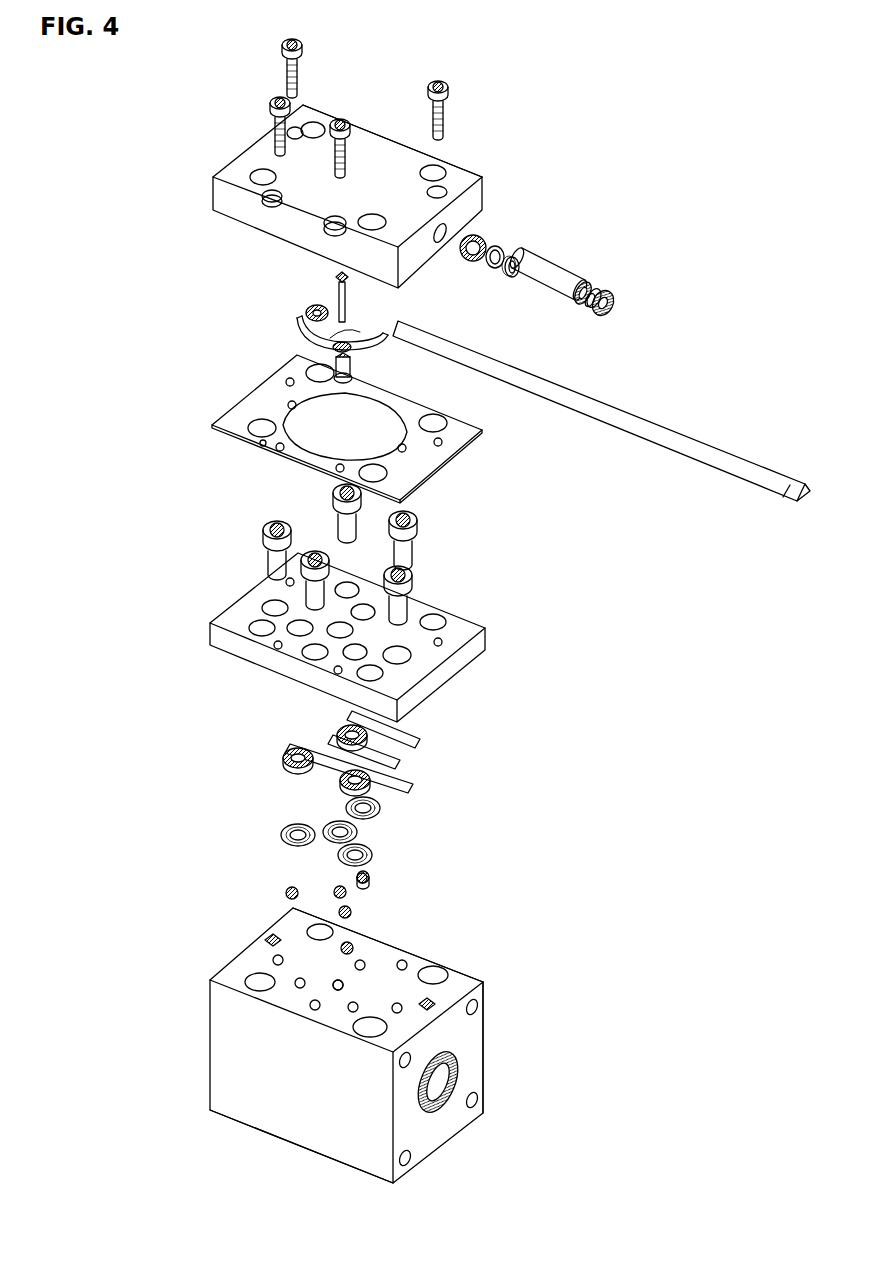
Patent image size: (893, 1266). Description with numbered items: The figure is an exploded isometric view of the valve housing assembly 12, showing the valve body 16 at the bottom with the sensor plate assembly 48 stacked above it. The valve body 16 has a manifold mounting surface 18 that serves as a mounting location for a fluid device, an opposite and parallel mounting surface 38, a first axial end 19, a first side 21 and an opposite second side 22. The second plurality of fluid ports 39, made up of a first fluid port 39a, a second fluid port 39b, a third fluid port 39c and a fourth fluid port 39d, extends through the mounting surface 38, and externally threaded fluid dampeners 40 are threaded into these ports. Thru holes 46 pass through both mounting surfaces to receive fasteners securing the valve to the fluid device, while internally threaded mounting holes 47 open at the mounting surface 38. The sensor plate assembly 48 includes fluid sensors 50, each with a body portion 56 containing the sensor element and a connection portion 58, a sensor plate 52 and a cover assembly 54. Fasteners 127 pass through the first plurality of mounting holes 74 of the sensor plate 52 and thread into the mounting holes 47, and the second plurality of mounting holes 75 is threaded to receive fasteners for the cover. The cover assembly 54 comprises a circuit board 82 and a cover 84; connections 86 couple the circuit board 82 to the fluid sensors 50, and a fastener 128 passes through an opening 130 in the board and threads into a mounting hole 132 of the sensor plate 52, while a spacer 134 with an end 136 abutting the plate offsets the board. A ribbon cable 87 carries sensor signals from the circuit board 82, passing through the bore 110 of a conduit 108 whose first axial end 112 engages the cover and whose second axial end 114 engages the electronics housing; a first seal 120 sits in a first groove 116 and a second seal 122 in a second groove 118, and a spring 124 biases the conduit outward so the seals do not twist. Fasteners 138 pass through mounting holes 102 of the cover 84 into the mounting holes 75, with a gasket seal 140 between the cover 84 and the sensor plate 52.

The valve housing assembly 12 is at (113, 248).
The cover assembly 54 is at (209, 165).
The cover 84 is at (465, 158).
The mounting holes 102 is at (430, 191).
The fasteners 138 is at (447, 90).
The spring 124 is at (478, 236).
The first seal 120 is at (488, 263).
The first groove 116 is at (505, 275).
The first axial end 112 is at (515, 262).
The conduit 108 is at (553, 262).
The second groove 118 is at (585, 282).
The second axial end 114 is at (595, 286).
The bore 110 is at (588, 302).
The second seal 122 is at (614, 297).
The circuit board 82 is at (278, 314).
The connections 86 is at (310, 312).
The fastener 128 is at (346, 300).
The opening 130 is at (347, 320).
The spacer 134 is at (352, 360).
The end 136 is at (349, 370).
The cable 87 is at (627, 417).
The seal 140 is at (458, 452).
The sensor plate assembly 48 is at (190, 618).
The sensor plate 52 is at (250, 582).
The second plurality of mounting holes 75 is at (442, 638).
The first plurality of mounting holes 74 is at (413, 662).
The mounting hole 132 is at (340, 618).
The fasteners 127 is at (405, 597).
The fluid sensors 50 is at (278, 732).
The body portion 56 is at (350, 740).
The connection portion 58 is at (417, 735).
The fluid dampeners 40 is at (280, 885).
The valve body 16 is at (200, 1010).
The manifold mounting surface 18 is at (350, 1165).
The mounting surface 38 is at (455, 985).
The second side 22 is at (484, 1037).
The first side 21 is at (301, 1139).
The first axial end 19 is at (438, 1083).
The thru holes 46 is at (250, 975).
The mounting holes 47 is at (405, 965).
The second plurality of fluid ports 39 is at (330, 975).
The first fluid port 39a is at (346, 985).
The second fluid port 39b is at (365, 962).
The third fluid port 39c is at (297, 988).
The fourth fluid port 39d is at (352, 1011).